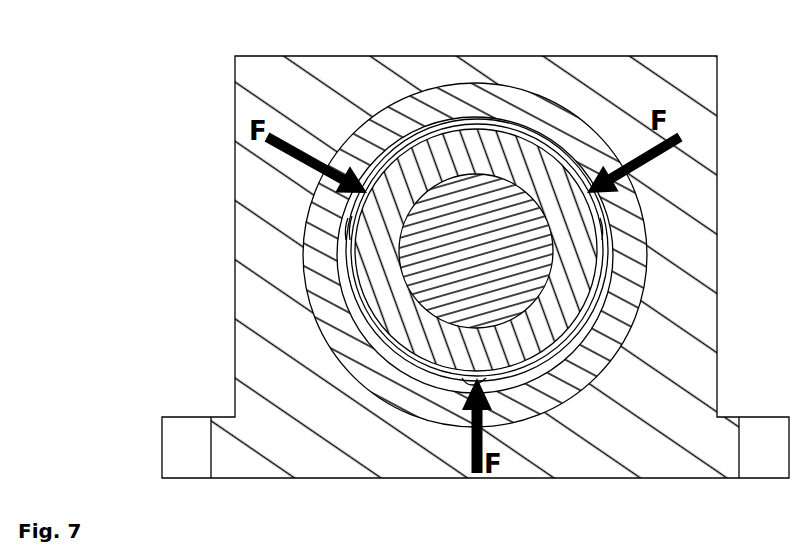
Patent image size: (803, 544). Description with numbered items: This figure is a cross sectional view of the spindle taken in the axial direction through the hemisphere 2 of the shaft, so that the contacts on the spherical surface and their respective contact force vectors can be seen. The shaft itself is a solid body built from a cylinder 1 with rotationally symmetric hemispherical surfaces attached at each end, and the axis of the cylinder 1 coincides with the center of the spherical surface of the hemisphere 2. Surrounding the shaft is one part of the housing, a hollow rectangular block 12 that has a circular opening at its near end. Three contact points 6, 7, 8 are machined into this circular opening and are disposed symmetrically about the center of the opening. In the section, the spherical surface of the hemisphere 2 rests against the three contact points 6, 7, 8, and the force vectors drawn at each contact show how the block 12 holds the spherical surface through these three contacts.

The cylinder 1 is at (427, 266).
The hemisphere 2 is at (523, 350).
The contact point 6 is at (580, 187).
The contact point 7 is at (468, 378).
The contact point 8 is at (367, 187).
The hollow rectangular block 12 is at (690, 323).